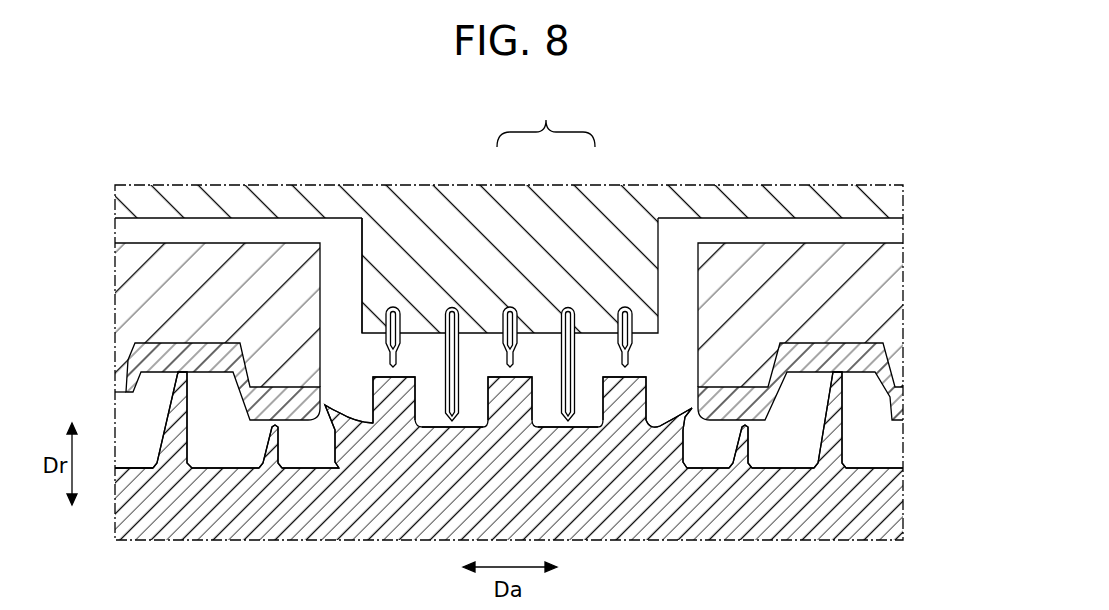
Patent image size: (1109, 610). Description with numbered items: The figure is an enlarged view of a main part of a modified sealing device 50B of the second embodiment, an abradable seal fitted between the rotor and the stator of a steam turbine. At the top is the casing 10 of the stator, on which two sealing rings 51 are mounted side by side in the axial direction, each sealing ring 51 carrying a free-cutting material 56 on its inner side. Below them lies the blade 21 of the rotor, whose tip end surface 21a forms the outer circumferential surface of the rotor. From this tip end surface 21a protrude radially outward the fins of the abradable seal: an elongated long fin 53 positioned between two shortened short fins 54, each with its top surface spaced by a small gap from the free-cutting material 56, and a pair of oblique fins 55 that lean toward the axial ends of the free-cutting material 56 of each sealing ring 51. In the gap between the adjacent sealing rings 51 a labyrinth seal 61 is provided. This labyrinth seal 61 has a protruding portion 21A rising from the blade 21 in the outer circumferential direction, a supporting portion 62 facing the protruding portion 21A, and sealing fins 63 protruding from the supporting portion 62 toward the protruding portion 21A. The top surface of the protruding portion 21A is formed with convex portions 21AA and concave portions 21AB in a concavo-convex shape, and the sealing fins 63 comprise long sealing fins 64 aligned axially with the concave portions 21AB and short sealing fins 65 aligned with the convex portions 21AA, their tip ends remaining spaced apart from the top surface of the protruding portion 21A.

The sealing device 50B is at (829, 160).
The casing 10 is at (128, 207).
The blade 21 is at (880, 490).
The tip end surface 21a is at (868, 467).
The protruding portion 21A is at (413, 504).
The convex portion 21AA is at (395, 402).
The concave portion 21AB is at (452, 438).
The sealing ring 51 is at (158, 285).
The long fin 53 is at (273, 448).
The short fin 54 is at (178, 448).
The oblique fin 55 is at (694, 440).
The free-cutting material 56 is at (150, 357).
The labyrinth seal 61 is at (355, 257).
The supporting portion 62 is at (645, 270).
The sealing fins 63 is at (546, 120).
The long sealing fin 64 is at (452, 307).
The short sealing fin 65 is at (393, 307).